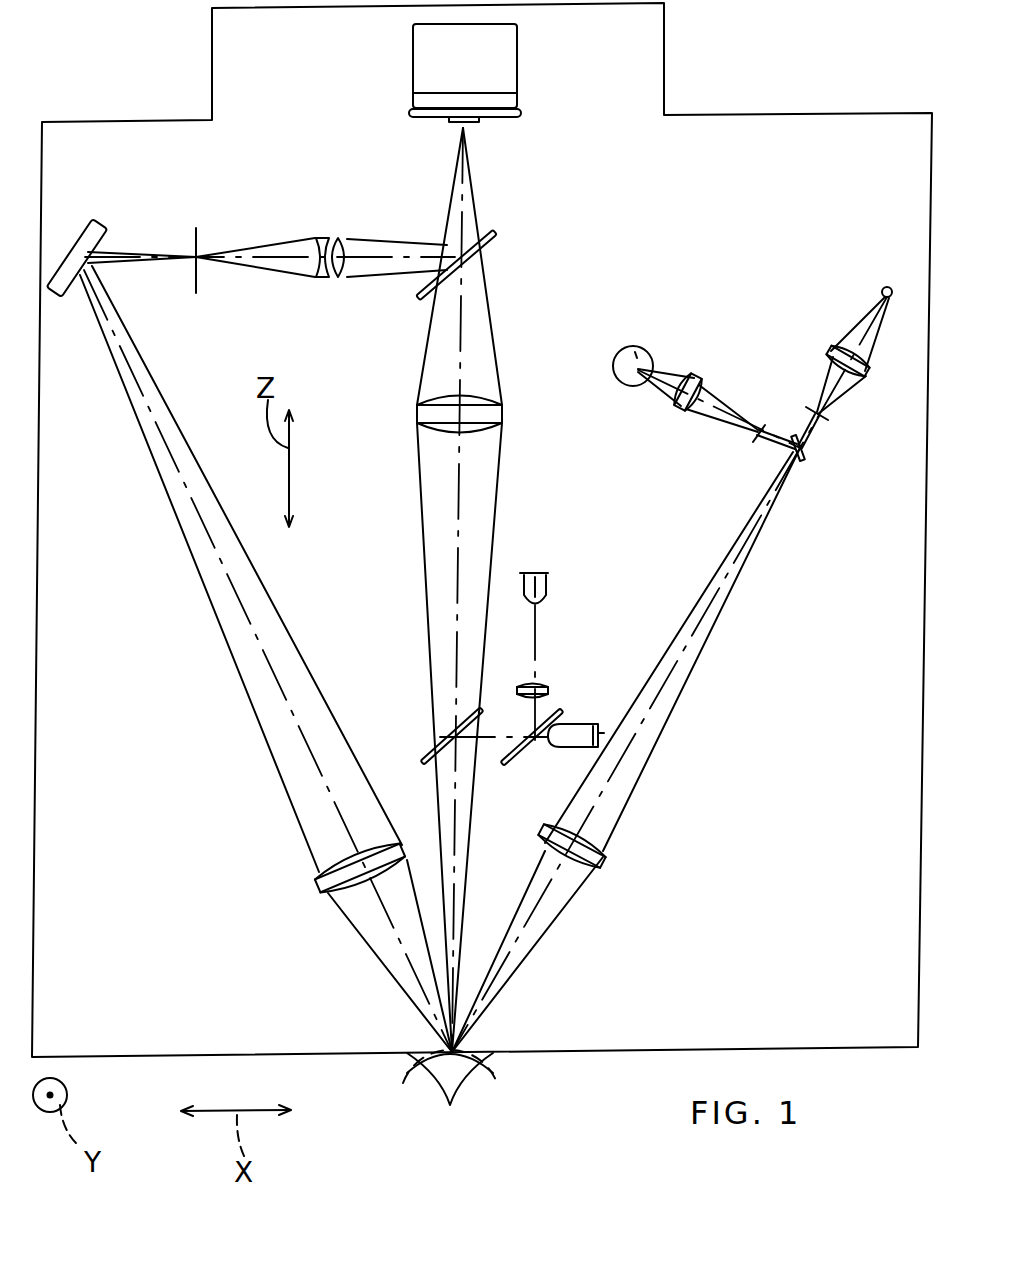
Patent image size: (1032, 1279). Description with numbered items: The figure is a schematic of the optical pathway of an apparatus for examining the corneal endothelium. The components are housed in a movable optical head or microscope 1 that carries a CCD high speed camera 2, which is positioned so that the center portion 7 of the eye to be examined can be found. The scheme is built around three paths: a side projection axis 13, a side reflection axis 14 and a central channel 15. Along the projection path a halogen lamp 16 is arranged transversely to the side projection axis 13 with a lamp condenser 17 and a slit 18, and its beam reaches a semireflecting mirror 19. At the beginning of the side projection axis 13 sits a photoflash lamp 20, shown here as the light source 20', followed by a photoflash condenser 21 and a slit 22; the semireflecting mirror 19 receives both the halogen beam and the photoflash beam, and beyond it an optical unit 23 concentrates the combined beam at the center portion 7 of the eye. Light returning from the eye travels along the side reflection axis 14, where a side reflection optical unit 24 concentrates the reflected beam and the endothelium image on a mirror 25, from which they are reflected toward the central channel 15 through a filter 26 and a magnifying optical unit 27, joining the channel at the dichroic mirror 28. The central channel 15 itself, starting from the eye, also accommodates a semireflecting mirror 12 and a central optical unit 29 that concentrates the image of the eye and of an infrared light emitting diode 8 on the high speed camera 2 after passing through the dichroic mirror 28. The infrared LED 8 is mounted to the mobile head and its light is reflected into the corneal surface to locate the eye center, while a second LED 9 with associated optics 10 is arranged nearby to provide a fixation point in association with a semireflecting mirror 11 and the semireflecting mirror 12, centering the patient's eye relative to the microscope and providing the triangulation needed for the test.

The microscope 1 is at (318, 10).
The CCD high speed camera 2 is at (497, 103).
The center portion of the eye 7 is at (485, 1095).
The infrared light emitting diode 8 is at (590, 724).
The second LED 9 is at (540, 590).
The optics 10 is at (545, 688).
The semireflecting mirror 11 is at (525, 745).
The semireflecting mirror 12 is at (440, 737).
The side projection axis 13 is at (690, 655).
The side reflection axis 14 is at (262, 660).
The central channel 15 is at (455, 565).
The halogen lamp 16 is at (640, 357).
The lamp condenser 17 is at (690, 385).
The slit 18 is at (767, 423).
The semireflecting mirror 19 is at (803, 458).
The photoflash lamp 20 is at (868, 285).
The light source 20' is at (868, 285).
The photoflash condenser 21 is at (866, 380).
The slit 22 is at (822, 420).
The optical unit 23 is at (605, 856).
The side reflection optical unit 24 is at (330, 880).
The mirror 25 is at (100, 228).
The filter 26 is at (199, 235).
The magnifying optical unit 27 is at (328, 238).
The dichroic mirror 28 is at (497, 230).
The central optical unit 29 is at (425, 403).